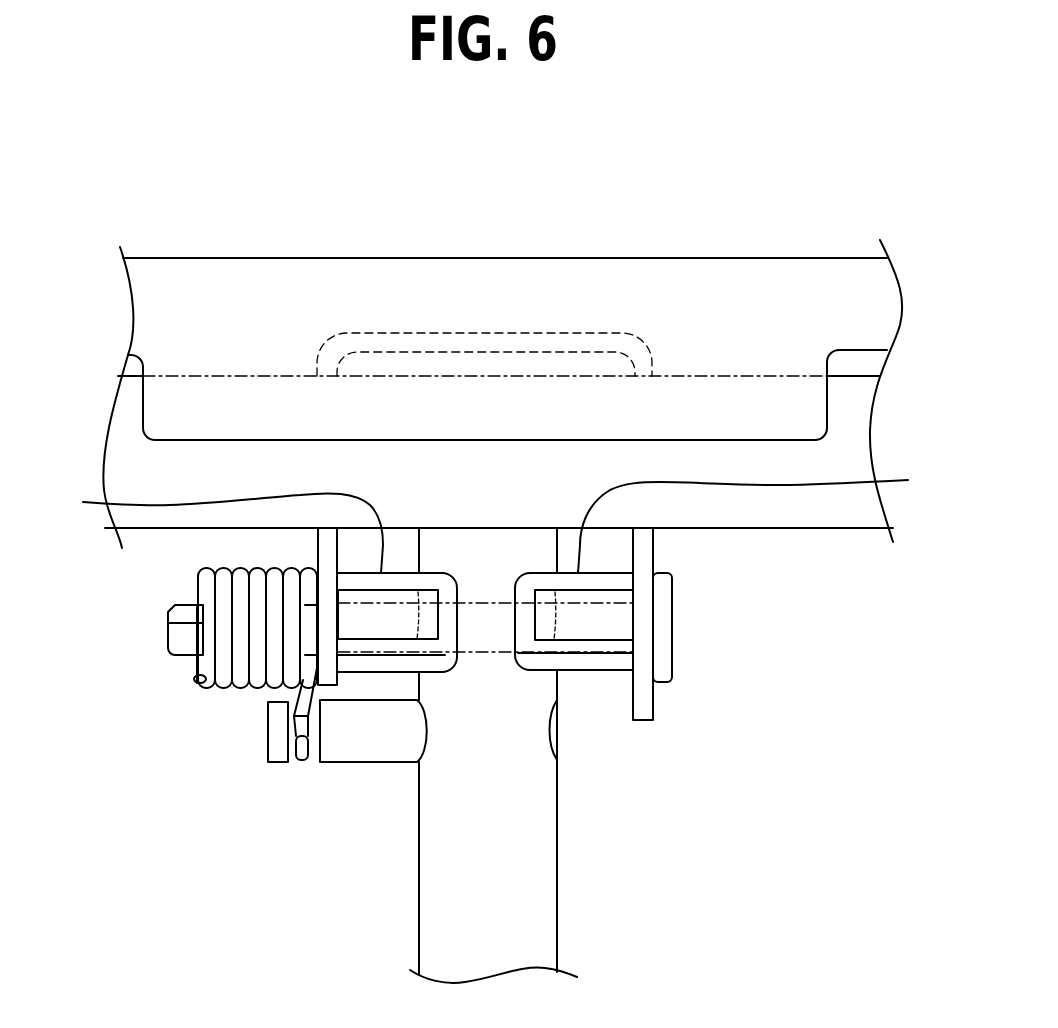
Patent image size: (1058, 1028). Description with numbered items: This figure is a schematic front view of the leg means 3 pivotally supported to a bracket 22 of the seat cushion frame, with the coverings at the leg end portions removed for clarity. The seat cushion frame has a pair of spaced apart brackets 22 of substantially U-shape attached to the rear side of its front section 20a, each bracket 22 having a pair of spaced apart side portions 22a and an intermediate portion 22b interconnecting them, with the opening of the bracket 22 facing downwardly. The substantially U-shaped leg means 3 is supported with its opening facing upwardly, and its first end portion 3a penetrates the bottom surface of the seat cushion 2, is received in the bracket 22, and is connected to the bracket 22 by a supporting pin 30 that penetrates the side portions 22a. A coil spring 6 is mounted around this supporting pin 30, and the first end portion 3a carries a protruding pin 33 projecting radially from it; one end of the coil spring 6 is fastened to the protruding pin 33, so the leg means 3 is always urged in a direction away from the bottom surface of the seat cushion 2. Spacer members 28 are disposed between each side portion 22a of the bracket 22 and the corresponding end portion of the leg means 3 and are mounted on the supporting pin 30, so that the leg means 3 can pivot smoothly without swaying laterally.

The seat cushion 2 is at (744, 252).
The leg means 3 is at (558, 805).
The first end portion 3a is at (463, 760).
The coil spring 6 is at (238, 692).
The front section 20a is at (793, 513).
The bracket 22 is at (514, 322).
The side portion 22a is at (317, 549).
The intermediate portion 22b is at (590, 333).
The spacer member 28 is at (492, 514).
The supporting pin 30 is at (190, 641).
The protruding pin 33 is at (358, 740).